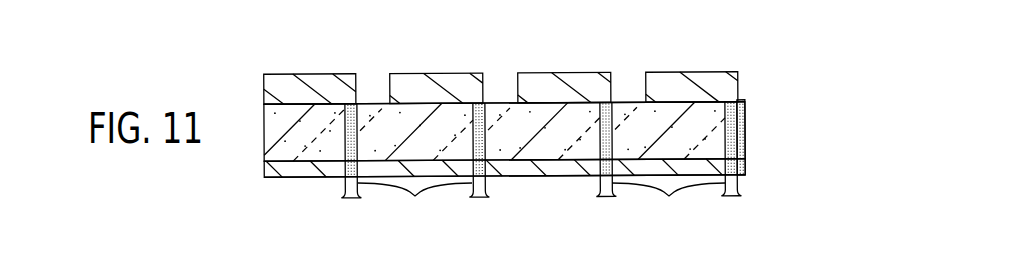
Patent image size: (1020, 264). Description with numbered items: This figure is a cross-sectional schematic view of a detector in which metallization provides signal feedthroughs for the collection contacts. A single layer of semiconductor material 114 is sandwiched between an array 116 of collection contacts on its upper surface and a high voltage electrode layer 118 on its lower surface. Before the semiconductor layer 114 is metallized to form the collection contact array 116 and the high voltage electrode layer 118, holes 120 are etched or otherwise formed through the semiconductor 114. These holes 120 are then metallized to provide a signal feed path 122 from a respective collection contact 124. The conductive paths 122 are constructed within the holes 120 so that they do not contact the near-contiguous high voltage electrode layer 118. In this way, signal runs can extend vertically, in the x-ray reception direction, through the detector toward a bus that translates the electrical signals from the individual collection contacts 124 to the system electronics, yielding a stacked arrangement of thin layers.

The semiconductor material layer 114 is at (752, 107).
The array of collection contacts 116 is at (733, 35).
The high voltage electrode layer 118 is at (734, 209).
The holes 120 is at (358, 103).
The signal feed path 122 is at (541, 205).
The collection contact 124 is at (309, 73).